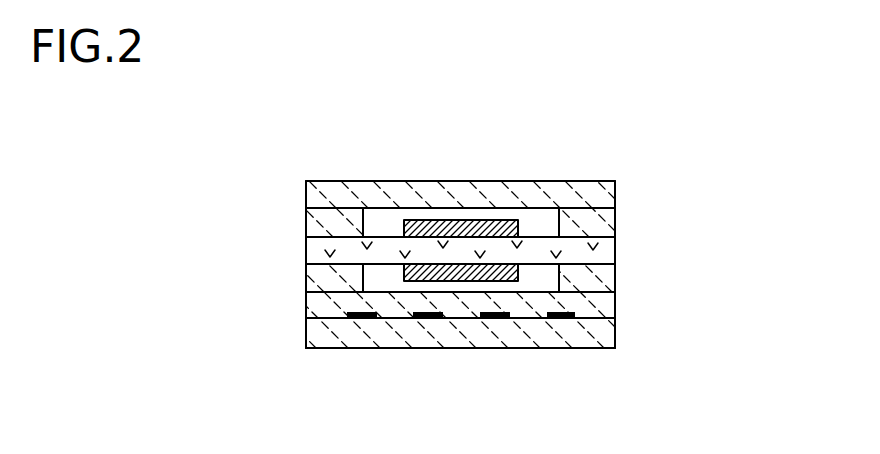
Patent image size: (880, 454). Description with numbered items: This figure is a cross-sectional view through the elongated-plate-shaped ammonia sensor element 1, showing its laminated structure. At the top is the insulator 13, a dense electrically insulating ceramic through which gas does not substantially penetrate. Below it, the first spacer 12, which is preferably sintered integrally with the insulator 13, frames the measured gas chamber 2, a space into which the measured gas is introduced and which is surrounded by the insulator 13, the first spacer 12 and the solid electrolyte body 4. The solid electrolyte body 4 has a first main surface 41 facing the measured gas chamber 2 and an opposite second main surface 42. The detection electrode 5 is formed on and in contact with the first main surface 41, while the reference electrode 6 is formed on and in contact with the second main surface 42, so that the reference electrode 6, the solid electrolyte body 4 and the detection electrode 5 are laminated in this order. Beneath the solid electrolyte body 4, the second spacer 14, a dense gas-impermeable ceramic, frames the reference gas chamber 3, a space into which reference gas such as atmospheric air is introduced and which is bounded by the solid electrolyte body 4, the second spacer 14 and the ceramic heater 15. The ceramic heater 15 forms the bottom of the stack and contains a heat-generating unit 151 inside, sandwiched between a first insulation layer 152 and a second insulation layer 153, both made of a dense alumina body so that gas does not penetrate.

The ammonia sensor element 1 is at (628, 133).
The measured gas chamber 2 is at (542, 220).
The reference gas chamber 3 is at (388, 283).
The solid electrolyte body 4 is at (603, 250).
The detection electrode 5 is at (475, 228).
The reference electrode 6 is at (457, 274).
The first spacer 12 is at (325, 227).
The insulator 13 is at (331, 195).
The second spacer 14 is at (325, 278).
The ceramic heater 15 is at (172, 273).
The first main surface 41 is at (387, 233).
The second main surface 42 is at (538, 268).
The heat-generating unit 151 is at (345, 315).
The first insulation layer 152 is at (325, 338).
The second insulation layer 153 is at (325, 298).